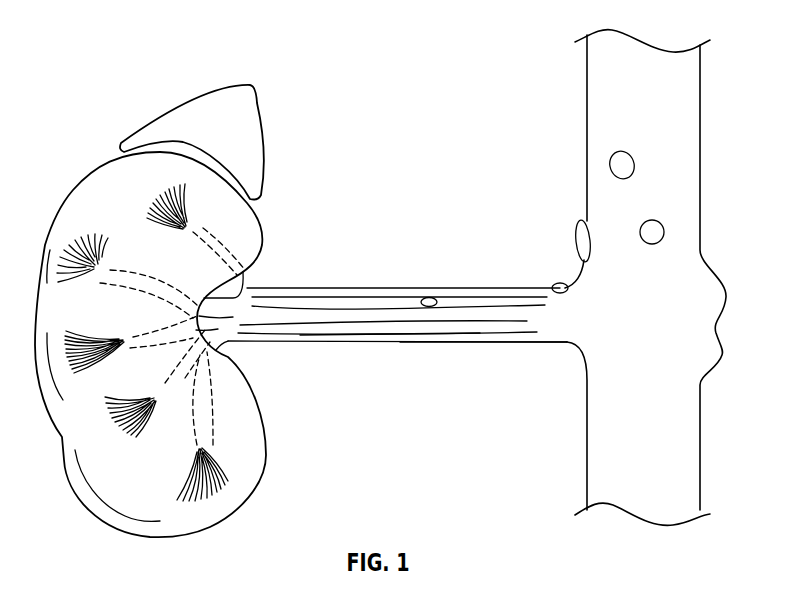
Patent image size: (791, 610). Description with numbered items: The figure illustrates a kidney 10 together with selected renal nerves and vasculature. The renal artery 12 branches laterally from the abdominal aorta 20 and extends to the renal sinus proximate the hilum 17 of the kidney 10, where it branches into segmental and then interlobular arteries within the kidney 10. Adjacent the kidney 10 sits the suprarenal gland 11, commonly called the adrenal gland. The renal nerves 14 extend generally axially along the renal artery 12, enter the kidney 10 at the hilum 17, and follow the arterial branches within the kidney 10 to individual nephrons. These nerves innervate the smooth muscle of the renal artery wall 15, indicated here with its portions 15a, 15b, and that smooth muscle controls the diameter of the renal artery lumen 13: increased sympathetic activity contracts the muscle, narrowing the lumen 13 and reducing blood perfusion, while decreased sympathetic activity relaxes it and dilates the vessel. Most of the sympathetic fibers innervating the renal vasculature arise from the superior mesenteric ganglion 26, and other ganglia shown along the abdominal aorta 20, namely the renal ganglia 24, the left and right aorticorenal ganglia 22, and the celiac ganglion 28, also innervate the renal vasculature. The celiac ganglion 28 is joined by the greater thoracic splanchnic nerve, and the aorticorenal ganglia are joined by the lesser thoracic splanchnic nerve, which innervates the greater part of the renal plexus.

The kidney 10 is at (68, 190).
The suprarenal gland 11 is at (185, 103).
The renal artery 12 is at (364, 288).
The renal artery lumen 13 is at (577, 315).
The renal nerves 14 is at (275, 320).
The renal artery wall 15 is at (328, 343).
The afferent renal nerve fiber 15a is at (393, 337).
The efferent renal nerve fiber 15b is at (495, 345).
The hilum 17 is at (289, 256).
The abdominal aorta 20 is at (612, 402).
The aorticorenal ganglia 22 is at (575, 240).
The renal ganglia 24 is at (425, 297).
The superior mesenteric ganglion 26 is at (665, 230).
The celiac ganglion 28 is at (610, 165).